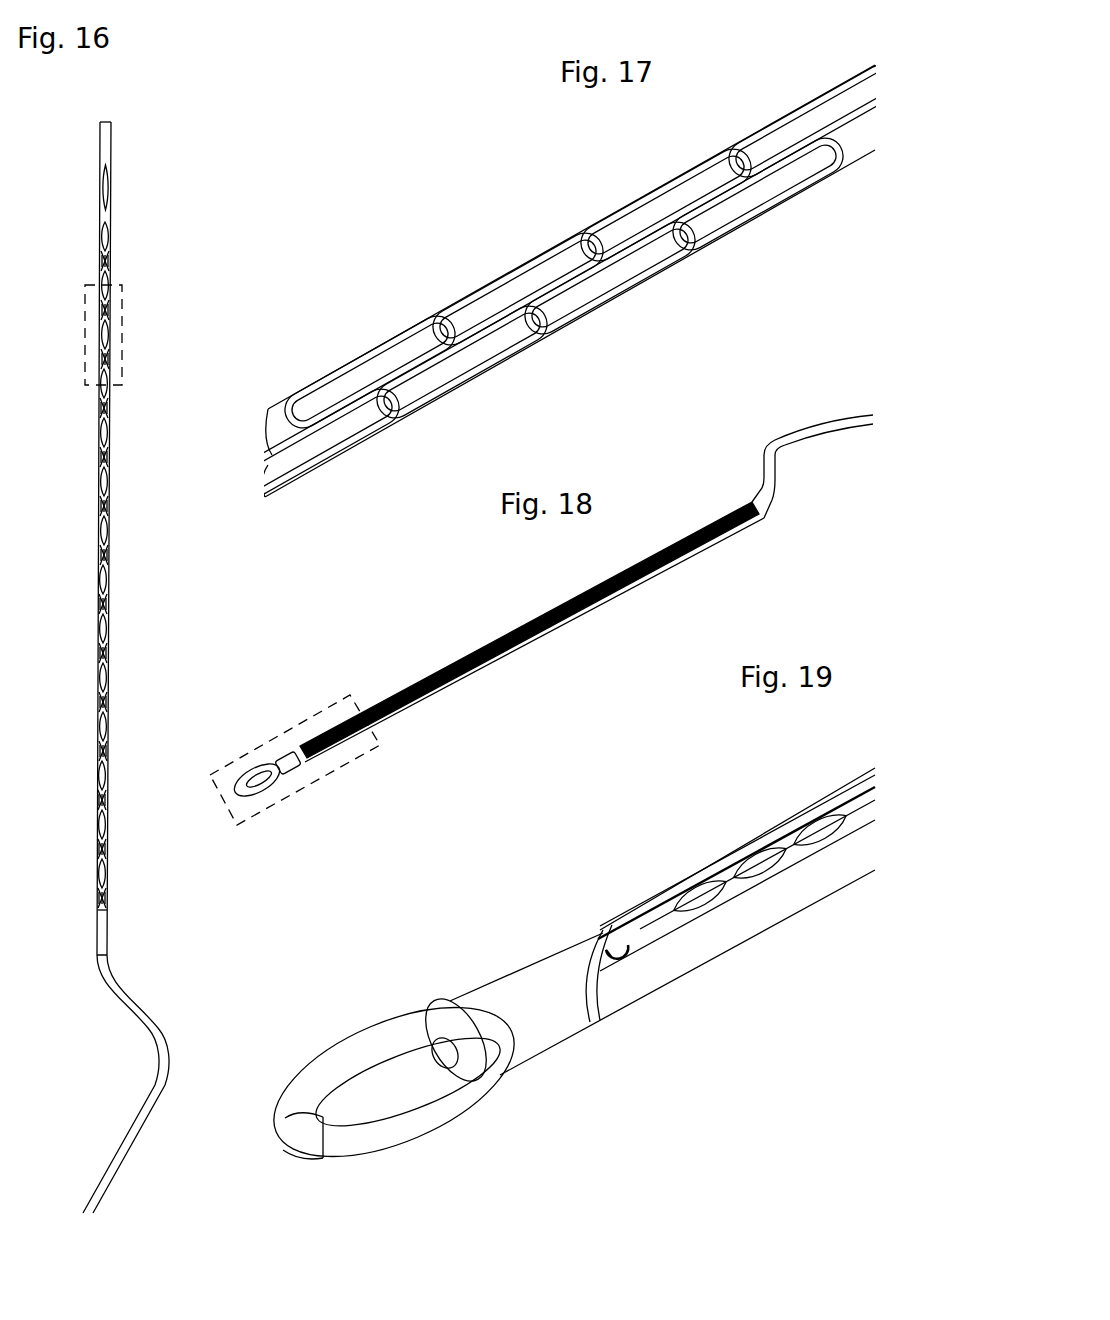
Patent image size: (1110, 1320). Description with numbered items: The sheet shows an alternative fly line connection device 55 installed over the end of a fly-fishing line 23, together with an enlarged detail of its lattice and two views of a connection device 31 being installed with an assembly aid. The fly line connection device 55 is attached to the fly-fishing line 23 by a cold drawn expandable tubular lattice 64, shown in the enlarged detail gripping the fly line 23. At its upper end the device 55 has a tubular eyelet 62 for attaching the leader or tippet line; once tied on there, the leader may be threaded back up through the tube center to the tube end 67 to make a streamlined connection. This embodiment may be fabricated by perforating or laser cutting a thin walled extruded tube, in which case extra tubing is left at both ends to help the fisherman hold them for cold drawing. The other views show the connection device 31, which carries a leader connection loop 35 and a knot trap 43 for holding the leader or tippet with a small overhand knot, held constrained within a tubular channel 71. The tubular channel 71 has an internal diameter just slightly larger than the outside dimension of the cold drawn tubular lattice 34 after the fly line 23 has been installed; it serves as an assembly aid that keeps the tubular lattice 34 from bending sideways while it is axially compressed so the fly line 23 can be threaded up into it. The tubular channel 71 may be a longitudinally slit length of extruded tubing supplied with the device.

In FIG. 16, the fly-fishing line 23 is at (165, 1035).
In FIG. 17, the fly-fishing line 23 is at (457, 327).
In FIG. 18, the fly-fishing line 23 is at (772, 435).
In FIG. 19, the fly-fishing line 23 is at (625, 940).
In FIG. 18, the connection device 31 is at (488, 625).
In FIG. 18, the tubular lattice 34 is at (338, 725).
In FIG. 19, the tubular lattice 34 is at (802, 828).
In FIG. 18, the leader connection loop 35 is at (267, 793).
In FIG. 19, the leader connection loop 35 is at (438, 1138).
In FIG. 18, the knot trap 43 is at (297, 757).
In FIG. 19, the knot trap 43 is at (565, 962).
In FIG. 16, the fly line connection device 55 is at (120, 232).
In FIG. 16, the tubular eyelet 62 is at (110, 180).
In FIG. 16, the cold drawn expandable tubular lattice 64 is at (108, 313).
In FIG. 17, the cold drawn expandable tubular lattice 64 is at (567, 247).
In FIG. 16, the tube end 67 is at (108, 120).
In FIG. 18, the tubular channel 71 is at (348, 753).
In FIG. 19, the tubular channel 71 is at (740, 937).